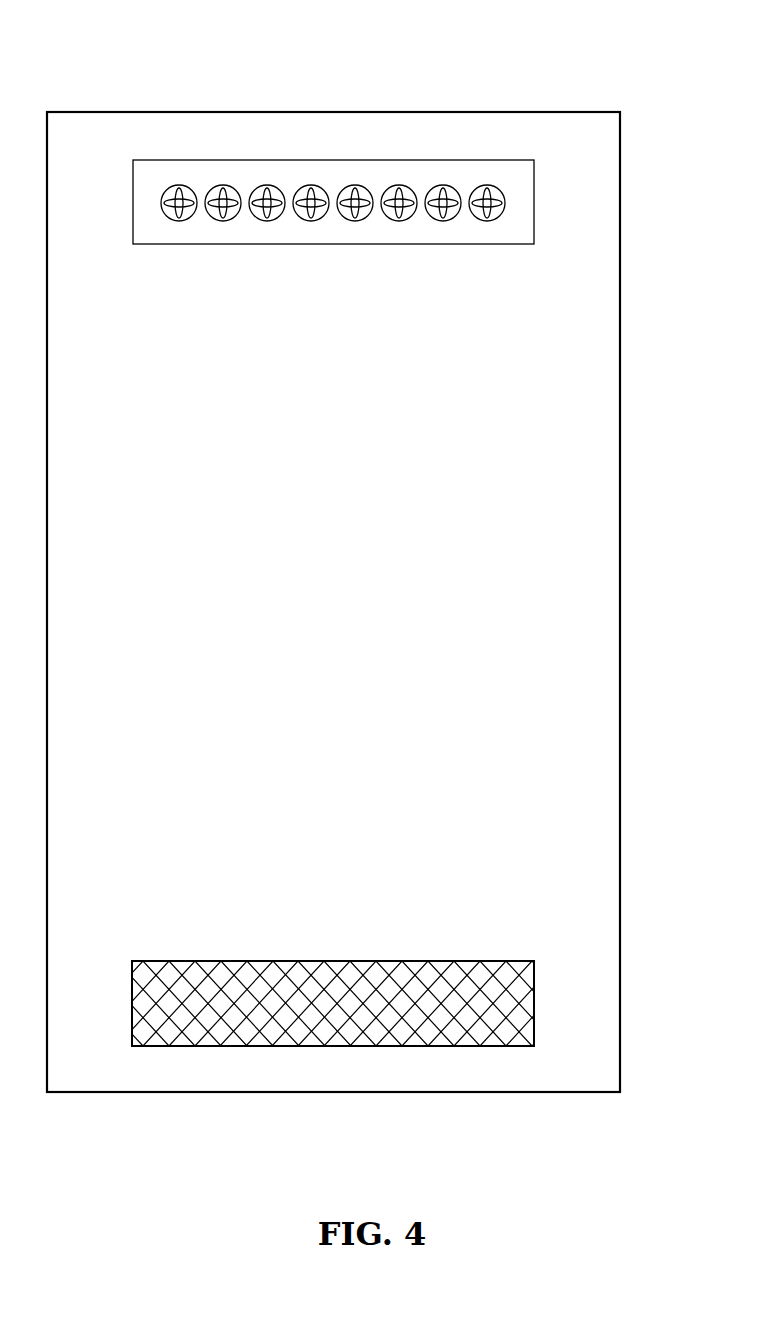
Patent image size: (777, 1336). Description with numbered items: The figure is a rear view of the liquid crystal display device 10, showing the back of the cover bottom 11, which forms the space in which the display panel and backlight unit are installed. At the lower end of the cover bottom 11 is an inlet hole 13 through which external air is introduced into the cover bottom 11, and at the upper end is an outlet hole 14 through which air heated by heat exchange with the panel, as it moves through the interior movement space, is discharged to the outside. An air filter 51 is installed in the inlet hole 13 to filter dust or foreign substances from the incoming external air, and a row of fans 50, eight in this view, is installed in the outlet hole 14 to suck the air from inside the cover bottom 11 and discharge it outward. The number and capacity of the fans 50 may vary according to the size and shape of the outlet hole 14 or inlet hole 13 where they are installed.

The liquid crystal display device 10 is at (634, 47).
The cover bottom 11 is at (621, 373).
The inlet hole 13 is at (411, 1040).
The outlet hole 14 is at (513, 160).
The fan 50 is at (258, 193).
The air filter 51 is at (505, 1002).